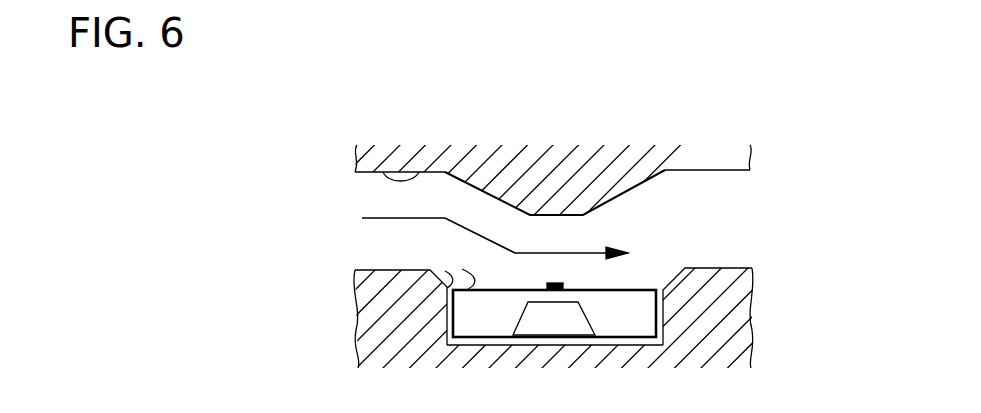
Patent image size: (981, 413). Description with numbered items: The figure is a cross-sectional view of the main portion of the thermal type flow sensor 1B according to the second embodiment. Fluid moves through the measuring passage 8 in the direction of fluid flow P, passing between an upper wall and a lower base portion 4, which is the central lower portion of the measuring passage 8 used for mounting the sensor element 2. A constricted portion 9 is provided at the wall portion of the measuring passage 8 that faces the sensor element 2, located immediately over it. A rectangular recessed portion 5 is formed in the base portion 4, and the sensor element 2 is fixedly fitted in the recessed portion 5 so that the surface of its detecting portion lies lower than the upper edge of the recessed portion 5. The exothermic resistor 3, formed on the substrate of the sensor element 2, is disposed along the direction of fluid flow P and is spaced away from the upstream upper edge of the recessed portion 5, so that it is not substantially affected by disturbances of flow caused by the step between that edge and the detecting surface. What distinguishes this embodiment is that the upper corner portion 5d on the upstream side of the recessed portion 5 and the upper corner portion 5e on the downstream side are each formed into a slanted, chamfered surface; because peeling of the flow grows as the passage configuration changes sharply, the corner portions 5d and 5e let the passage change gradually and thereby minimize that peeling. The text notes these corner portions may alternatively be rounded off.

The thermal type flow sensor 1B is at (336, 104).
The measuring passage 8 is at (419, 171).
The constricted portion 9 is at (575, 185).
The direction of fluid flow P is at (386, 217).
The base portion 4 is at (360, 322).
The upper corner portion on the upstream side 5d is at (427, 268).
The upper corner portion on the downstream side 5e is at (680, 266).
The sensor element 2 is at (631, 328).
The recessed portion 5 is at (591, 343).
The exothermic resistor 3 is at (547, 288).